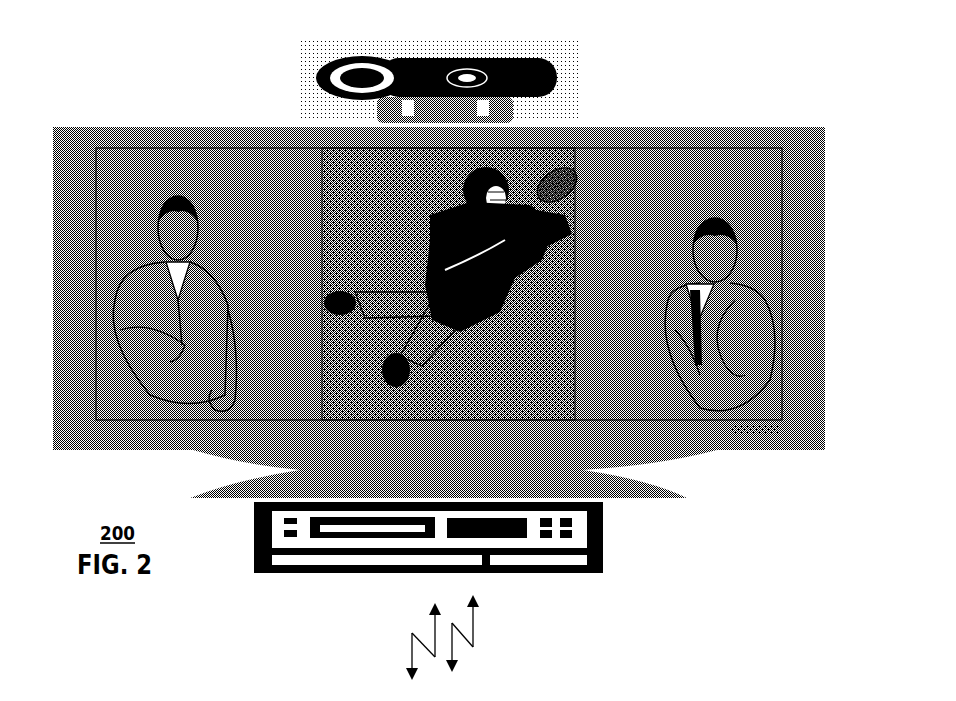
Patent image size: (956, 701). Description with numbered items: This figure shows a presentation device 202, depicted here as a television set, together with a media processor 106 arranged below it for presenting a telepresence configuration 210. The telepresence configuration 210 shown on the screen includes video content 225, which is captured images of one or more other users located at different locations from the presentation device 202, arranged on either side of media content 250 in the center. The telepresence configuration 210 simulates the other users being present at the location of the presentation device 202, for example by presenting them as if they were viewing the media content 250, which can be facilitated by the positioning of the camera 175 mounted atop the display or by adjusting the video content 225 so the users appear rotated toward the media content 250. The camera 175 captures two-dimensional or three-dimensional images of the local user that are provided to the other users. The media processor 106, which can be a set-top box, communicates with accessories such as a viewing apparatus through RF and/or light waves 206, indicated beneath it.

The camera 175 is at (537, 62).
The telepresence configuration 210 is at (660, 138).
The video content 225 is at (142, 226).
The media content 250 is at (552, 298).
The presentation device 202 is at (717, 450).
The media processor 106 is at (603, 535).
The RF and/or light waves 206 is at (477, 612).